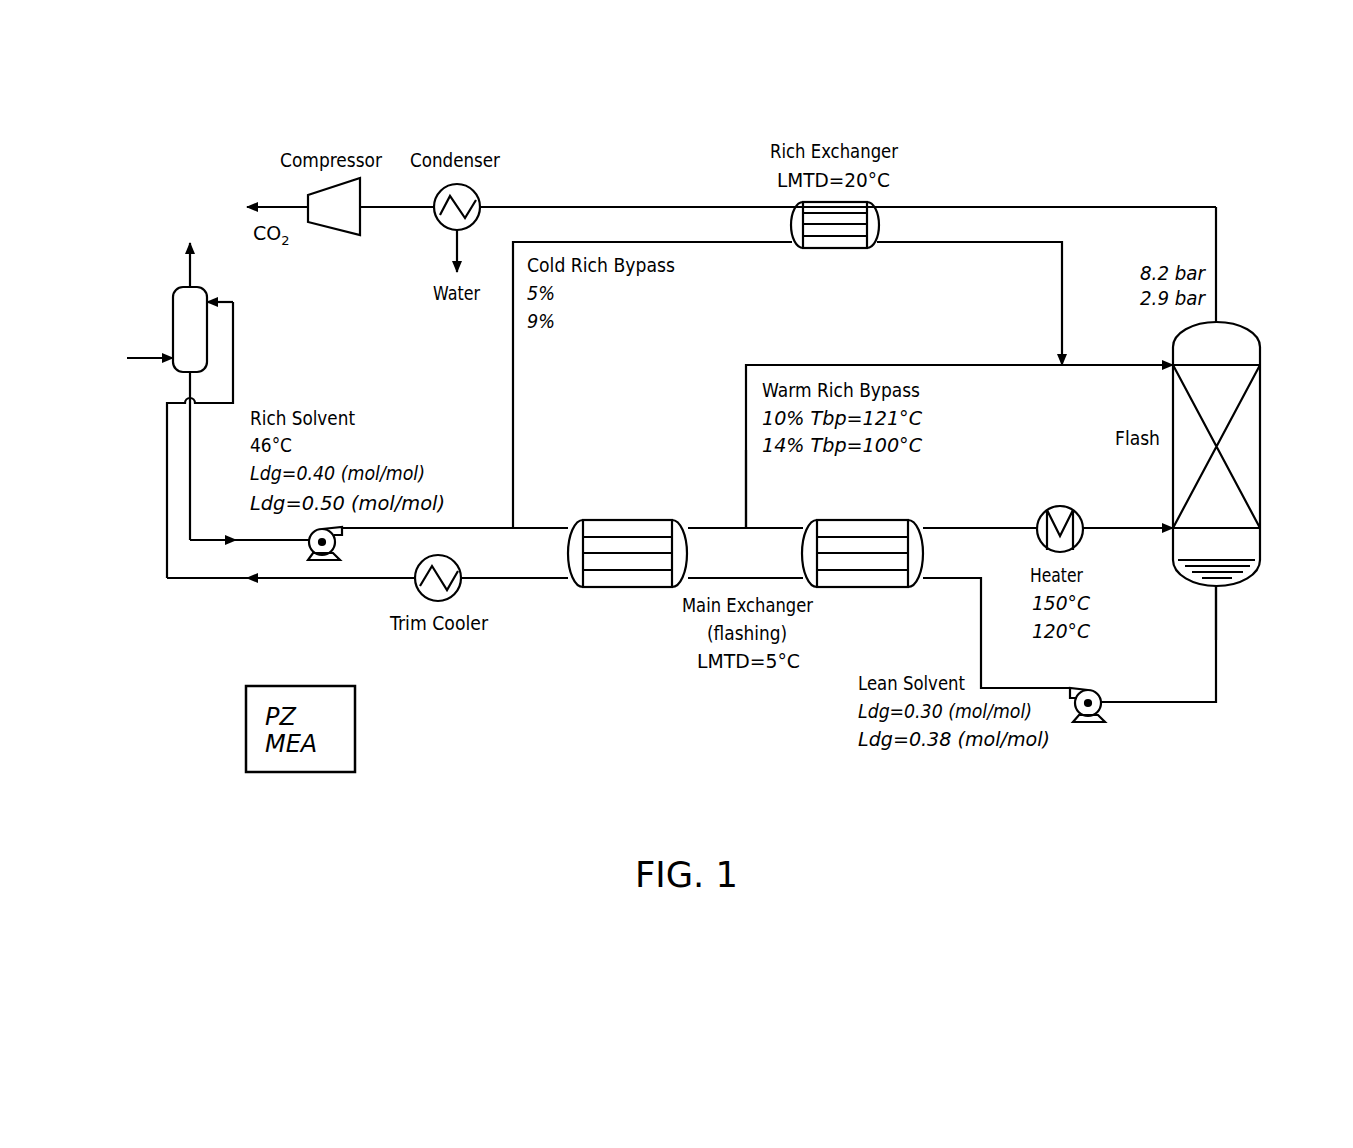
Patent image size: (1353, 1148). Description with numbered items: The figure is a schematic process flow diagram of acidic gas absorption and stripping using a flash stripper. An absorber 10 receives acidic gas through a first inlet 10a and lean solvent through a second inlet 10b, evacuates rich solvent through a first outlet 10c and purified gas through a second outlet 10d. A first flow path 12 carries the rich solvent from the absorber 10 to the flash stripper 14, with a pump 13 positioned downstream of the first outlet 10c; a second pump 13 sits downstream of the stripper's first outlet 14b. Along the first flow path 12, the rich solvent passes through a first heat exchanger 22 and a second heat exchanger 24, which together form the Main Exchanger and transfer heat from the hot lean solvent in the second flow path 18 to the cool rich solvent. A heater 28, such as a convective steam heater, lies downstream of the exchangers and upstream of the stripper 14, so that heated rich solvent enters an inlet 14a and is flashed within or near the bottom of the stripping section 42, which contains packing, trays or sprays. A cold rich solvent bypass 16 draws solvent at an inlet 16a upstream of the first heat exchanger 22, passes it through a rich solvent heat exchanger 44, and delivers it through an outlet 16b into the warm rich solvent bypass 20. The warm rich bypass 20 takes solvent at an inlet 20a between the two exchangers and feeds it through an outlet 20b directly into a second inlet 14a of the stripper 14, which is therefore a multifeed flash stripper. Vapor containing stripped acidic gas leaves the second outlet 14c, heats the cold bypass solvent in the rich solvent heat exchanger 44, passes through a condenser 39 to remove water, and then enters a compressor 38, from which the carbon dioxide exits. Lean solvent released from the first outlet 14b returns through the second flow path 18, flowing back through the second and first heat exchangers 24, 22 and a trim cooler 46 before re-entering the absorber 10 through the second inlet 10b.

The absorber 10 is at (173, 312).
The first inlet 10a is at (173, 350).
The second inlet 10b is at (233, 302).
The first outlet 10c is at (190, 372).
The second outlet 10d is at (190, 287).
The first flow path 12 is at (486, 528).
The pump 13 is at (340, 545).
The flash stripper 14 is at (1253, 333).
The inlet 14a is at (1171, 368).
The first outlet 14b is at (1218, 590).
The second outlet 14c is at (1218, 322).
The cold rich solvent bypass 16 is at (513, 395).
The inlet of cold rich solvent bypass 16a is at (513, 528).
The outlet of cold rich bypass 16b is at (1058, 360).
The second flow path 18 is at (293, 582).
The warm rich solvent bypass 20 is at (745, 415).
The inlet of warm rich solvent bypass 20a is at (745, 525).
The outlet of warm rich solvent bypass 20b is at (1172, 363).
The first heat exchanger 22 is at (627, 520).
The second heat exchanger 24 is at (865, 520).
The heater 28 is at (1053, 506).
The compressor 38 is at (308, 195).
The condenser 39 is at (478, 195).
The stripping section 42 is at (1261, 405).
The rich solvent heat exchanger 44 is at (833, 249).
The trim cooler 46 is at (458, 590).